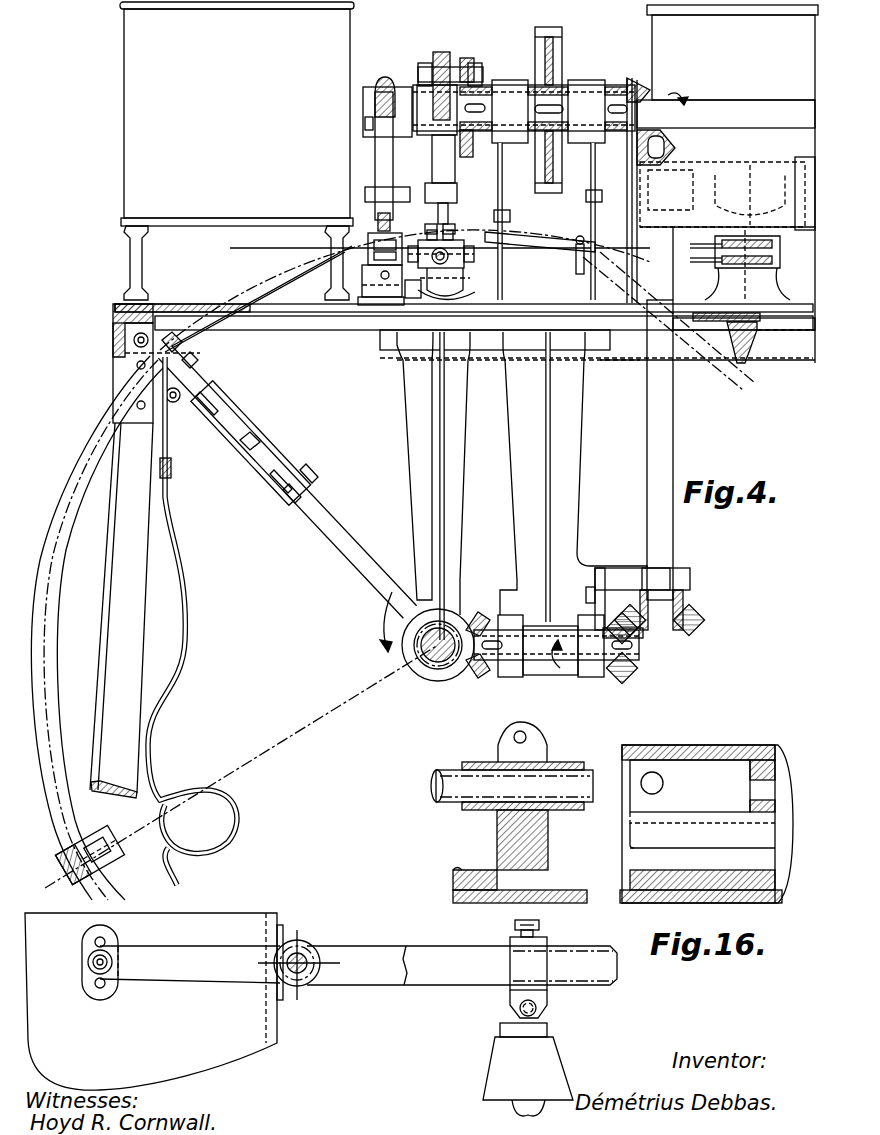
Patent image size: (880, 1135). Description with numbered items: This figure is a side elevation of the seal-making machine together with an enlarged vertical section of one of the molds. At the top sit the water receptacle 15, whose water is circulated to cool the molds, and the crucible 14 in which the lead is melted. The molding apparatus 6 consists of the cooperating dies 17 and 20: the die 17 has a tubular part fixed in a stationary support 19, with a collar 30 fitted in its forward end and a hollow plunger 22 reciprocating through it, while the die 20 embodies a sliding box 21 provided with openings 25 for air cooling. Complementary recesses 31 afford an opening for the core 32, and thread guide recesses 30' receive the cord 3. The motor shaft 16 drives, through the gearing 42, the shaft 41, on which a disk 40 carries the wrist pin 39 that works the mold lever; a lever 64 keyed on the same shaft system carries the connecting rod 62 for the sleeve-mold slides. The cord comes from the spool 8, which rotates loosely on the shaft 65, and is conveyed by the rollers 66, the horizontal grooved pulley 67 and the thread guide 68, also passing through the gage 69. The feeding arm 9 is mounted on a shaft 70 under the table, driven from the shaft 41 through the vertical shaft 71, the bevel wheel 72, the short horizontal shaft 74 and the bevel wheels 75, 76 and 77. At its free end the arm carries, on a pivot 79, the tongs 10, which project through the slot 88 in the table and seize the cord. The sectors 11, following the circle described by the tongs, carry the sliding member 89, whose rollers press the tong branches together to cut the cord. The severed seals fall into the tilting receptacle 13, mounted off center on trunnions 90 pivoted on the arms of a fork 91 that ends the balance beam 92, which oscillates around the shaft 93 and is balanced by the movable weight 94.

In FIG. 4, the receptacle 15 is at (237, 151).
In FIG. 4, the slot 88 is at (330, 330).
In FIG. 4, the sectors 11 is at (98, 430).
In FIG. 4, the feeding arm 9 is at (287, 475).
In FIG. 4, the clip 10 is at (200, 392).
In FIG. 4, the pivot 79 is at (200, 378).
In FIG. 4, the sliding member 89 is at (68, 850).
In FIG. 4, the vertical shaft 71 is at (668, 290).
In FIG. 4, the shaft 70 is at (412, 655).
In FIG. 4, the bevel wheel 77 is at (500, 677).
In FIG. 4, the short horizontal shaft 74 is at (560, 672).
In FIG. 4, the bevel wheel 76 is at (620, 682).
In FIG. 4, the bevel wheel 75 is at (645, 635).
In FIG. 4, the connecting rod 62 is at (378, 143).
In FIG. 4, the lever 64 is at (392, 80).
In FIG. 4, the thread guide recesses 30' is at (381, 312).
In FIG. 4, the wrist pin 39 is at (443, 55).
In FIG. 4, the disk 40 is at (470, 66).
In FIG. 4, the shaft 41 is at (478, 98).
In FIG. 4, the gearing 42 is at (558, 55).
In FIG. 4, the bevel wheel 72 is at (641, 80).
In FIG. 4, the crucible 14 is at (732, 184).
In FIG. 4, the motor shaft 16 is at (708, 105).
In FIG. 4, the shaft 65 is at (735, 195).
In FIG. 4, the spool 8 is at (803, 230).
In FIG. 4, the rollers 66 is at (770, 270).
In FIG. 4, the horizontal grooved pulley 67 is at (700, 244).
In FIG. 4, the cord 3 is at (680, 254).
In FIG. 4, the thread guide 68 is at (545, 258).
In FIG. 4, the gage 69 is at (580, 250).
In FIG. 4, the core 32 is at (450, 222).
In FIG. 4, the collar 30 is at (447, 242).
In FIG. 4, the recesses 31 is at (462, 257).
In FIG. 4, the die 17 is at (459, 278).
In FIG. 16, the die 17 is at (617, 822).
In FIG. 4, the plunger 22 is at (462, 292).
In FIG. 16, the plunger 22 is at (450, 778).
In FIG. 16, the stationary support 19 is at (548, 830).
In FIG. 16, the molding apparatus 6 is at (712, 812).
In FIG. 16, the box 21 is at (722, 758).
In FIG. 16, the die 20 is at (702, 786).
In FIG. 16, the openings 25 is at (660, 781).
In FIG. 16, the receptacle 13 is at (151, 1001).
In FIG. 16, the trunnions 90 is at (90, 965).
In FIG. 16, the fork 91 is at (208, 977).
In FIG. 16, the shaft 93 is at (300, 975).
In FIG. 16, the balance beam 92 is at (393, 982).
In FIG. 16, the weight 94 is at (528, 1018).